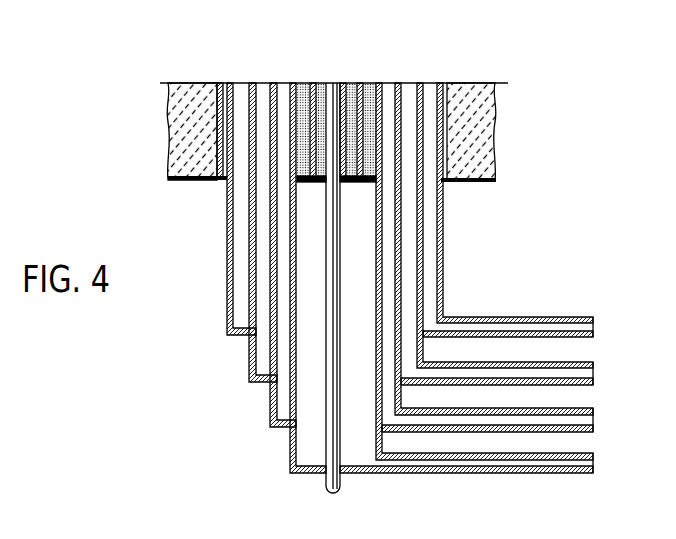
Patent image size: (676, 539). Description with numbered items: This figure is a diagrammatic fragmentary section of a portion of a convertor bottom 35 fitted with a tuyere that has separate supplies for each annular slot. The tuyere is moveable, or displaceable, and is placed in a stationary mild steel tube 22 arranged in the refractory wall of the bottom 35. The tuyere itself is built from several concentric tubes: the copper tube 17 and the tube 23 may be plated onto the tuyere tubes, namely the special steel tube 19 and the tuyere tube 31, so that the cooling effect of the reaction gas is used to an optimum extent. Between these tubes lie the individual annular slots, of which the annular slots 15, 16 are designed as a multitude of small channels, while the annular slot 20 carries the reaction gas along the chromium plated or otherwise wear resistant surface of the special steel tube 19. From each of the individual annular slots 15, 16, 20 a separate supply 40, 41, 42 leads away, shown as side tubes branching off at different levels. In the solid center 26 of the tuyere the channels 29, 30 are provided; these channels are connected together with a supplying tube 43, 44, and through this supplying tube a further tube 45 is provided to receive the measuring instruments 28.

The annular slot 15 is at (427, 257).
The annular slot 16 is at (387, 197).
The tube 17 is at (274, 85).
The special steel tube 19 is at (254, 87).
The annular slot 20 is at (410, 223).
The stationary mild steel tube 22 is at (214, 97).
The tube 23 is at (231, 87).
The solid center 26 is at (383, 100).
The measuring instruments 28 is at (343, 87).
The channel 29 is at (368, 85).
The channel 30 is at (323, 87).
The tuyere tube 31 is at (295, 87).
The convertor bottom 35 is at (463, 100).
The separate supply 40 is at (552, 327).
The separate supply 41 is at (583, 375).
The separate supply 42 is at (582, 425).
The supplying tube 43 is at (358, 453).
The supplying tube 44 is at (552, 462).
The tube 45 is at (328, 480).